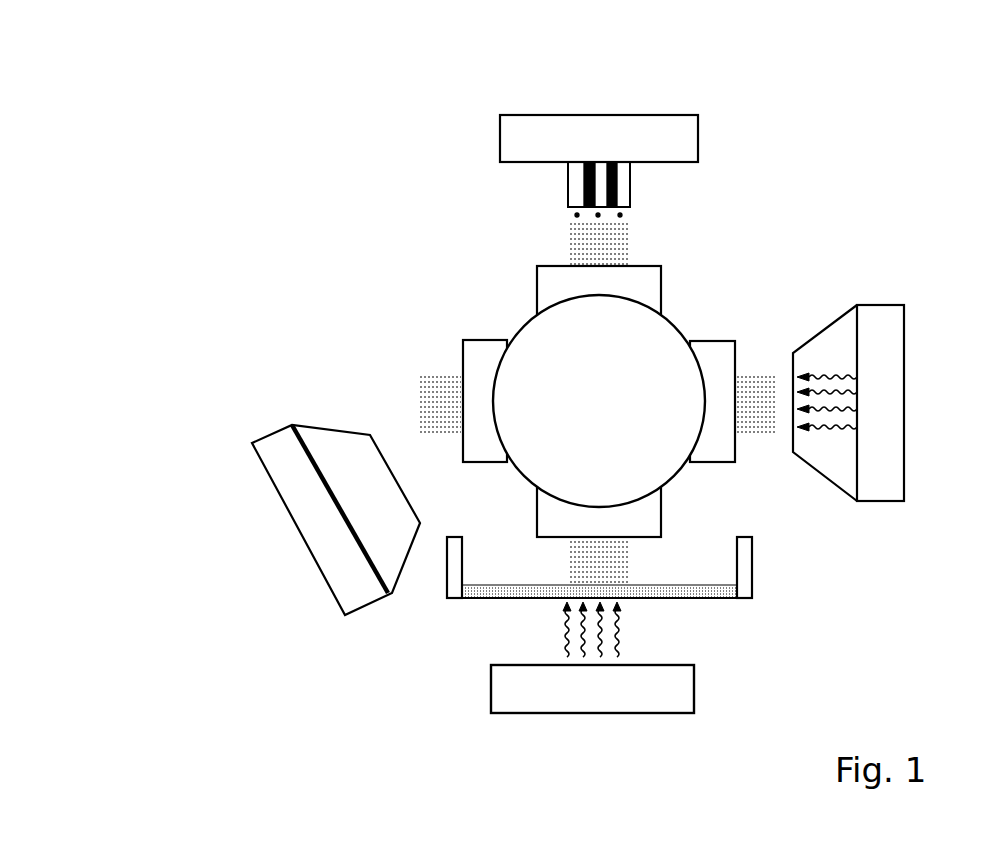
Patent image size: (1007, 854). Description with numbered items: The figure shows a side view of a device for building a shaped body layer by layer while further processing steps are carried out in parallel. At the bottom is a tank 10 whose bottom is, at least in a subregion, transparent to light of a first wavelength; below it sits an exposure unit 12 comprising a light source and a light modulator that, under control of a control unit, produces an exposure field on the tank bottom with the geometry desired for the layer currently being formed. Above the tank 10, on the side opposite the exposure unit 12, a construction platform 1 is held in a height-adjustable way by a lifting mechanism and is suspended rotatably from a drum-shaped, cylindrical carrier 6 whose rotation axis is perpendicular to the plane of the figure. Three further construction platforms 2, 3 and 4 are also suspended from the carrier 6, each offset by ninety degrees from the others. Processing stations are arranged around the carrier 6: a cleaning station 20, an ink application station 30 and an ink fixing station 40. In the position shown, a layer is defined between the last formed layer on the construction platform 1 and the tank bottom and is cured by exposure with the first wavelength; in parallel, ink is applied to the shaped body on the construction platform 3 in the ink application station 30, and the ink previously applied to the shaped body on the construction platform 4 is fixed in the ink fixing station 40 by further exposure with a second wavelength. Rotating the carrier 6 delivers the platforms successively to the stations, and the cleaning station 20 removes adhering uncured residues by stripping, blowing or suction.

The construction platform 1 is at (657, 507).
The construction platform 2 is at (479, 457).
The construction platform 3 is at (535, 282).
The construction platform 4 is at (705, 337).
The drum-shaped cylindrical carrier 6 is at (673, 323).
The tank 10 is at (740, 585).
The exposure unit 12 is at (592, 657).
The cleaning station 20 is at (319, 422).
The ink application station 30 is at (693, 132).
The ink fixing station 40 is at (877, 327).